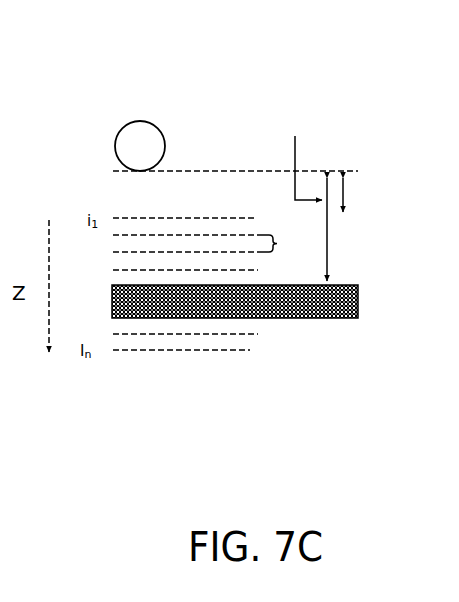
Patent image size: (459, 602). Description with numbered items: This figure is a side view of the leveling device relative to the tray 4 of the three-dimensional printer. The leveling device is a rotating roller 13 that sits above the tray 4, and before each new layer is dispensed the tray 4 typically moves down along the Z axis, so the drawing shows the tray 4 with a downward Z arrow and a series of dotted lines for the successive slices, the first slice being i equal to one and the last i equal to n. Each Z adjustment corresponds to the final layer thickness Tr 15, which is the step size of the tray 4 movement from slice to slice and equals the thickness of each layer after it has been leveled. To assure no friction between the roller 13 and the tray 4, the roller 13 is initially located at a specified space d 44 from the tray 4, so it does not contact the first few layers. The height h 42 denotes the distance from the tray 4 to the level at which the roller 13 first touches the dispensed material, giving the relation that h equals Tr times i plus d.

The tray 4 is at (361, 323).
The roller 13 is at (126, 121).
The final layer thickness Tr 15 is at (292, 216).
The height h 42 is at (244, 100).
The space d 44 is at (381, 182).